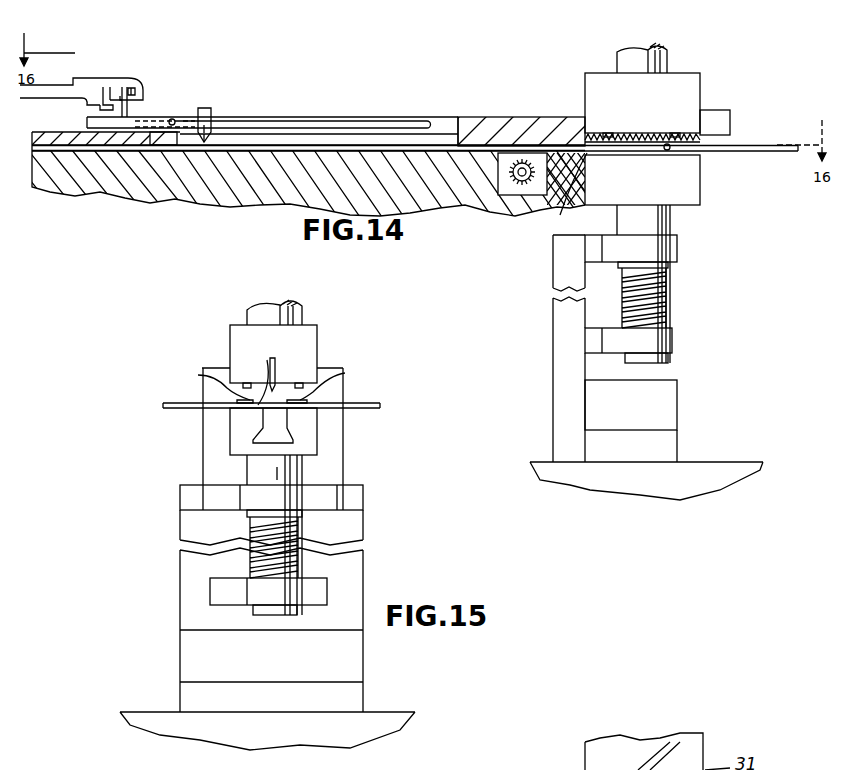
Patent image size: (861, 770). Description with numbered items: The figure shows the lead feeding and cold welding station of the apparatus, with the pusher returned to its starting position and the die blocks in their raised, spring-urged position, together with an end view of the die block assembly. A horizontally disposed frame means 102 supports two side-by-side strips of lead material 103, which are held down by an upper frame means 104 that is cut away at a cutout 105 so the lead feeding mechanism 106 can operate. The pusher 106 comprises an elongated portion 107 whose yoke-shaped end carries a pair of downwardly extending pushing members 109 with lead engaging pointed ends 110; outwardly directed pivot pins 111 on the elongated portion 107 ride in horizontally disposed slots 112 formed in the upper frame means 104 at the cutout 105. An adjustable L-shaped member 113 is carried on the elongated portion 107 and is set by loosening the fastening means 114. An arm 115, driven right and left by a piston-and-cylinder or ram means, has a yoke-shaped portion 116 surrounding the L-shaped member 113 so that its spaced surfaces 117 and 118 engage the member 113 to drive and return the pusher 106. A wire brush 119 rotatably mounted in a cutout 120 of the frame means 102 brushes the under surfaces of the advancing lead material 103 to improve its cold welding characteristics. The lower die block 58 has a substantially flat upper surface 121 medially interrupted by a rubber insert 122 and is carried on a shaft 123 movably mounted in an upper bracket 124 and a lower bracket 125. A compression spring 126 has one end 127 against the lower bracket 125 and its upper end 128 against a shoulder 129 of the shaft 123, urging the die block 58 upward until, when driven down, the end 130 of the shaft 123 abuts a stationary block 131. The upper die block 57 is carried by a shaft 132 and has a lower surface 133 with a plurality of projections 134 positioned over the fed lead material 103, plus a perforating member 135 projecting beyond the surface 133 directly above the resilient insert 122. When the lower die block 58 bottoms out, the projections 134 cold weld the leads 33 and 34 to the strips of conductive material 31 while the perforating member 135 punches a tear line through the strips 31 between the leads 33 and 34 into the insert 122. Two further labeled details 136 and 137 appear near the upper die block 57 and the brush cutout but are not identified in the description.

In FIG. 14, the frame means 102 is at (295, 190).
In FIG. 14, the strips of lead material 103 is at (330, 152).
In FIG. 14, the upper frame means 104 is at (480, 120).
In FIG. 14, the cutout 105 is at (443, 118).
In FIG. 14, the lead feeding mechanism 106 is at (192, 92).
In FIG. 14, the elongated portion 107 is at (152, 133).
In FIG. 14, the pushing members 109 is at (207, 108).
In FIG. 14, the pointed ends 110 is at (206, 143).
In FIG. 14, the pivot pins 111 is at (172, 119).
In FIG. 14, the slots 112 is at (302, 120).
In FIG. 14, the L-shaped member 113 is at (122, 85).
In FIG. 14, the fastening means 114 is at (110, 82).
In FIG. 14, the arm 115 is at (43, 88).
In FIG. 14, the yoke-shaped portion 116 is at (113, 87).
In FIG. 14, the surface 117 is at (85, 103).
In FIG. 14, the surface 118 is at (140, 88).
In FIG. 14, the wire brush 119 is at (524, 160).
In FIG. 14, the cutout 120 is at (533, 195).
In FIG. 14, the upper surface 121 is at (667, 150).
In FIG. 15, the upper surface 121 is at (250, 380).
In FIG. 15, the rubber insert 122 is at (277, 418).
In FIG. 14, the shaft 123 is at (670, 222).
In FIG. 15, the shaft 123 is at (293, 472).
In FIG. 14, the bracket 124 is at (667, 247).
In FIG. 15, the bracket 124 is at (328, 500).
In FIG. 14, the bracket 125 is at (667, 340).
In FIG. 15, the bracket 125 is at (222, 597).
In FIG. 14, the compression spring 126 is at (665, 282).
In FIG. 15, the compression spring 126 is at (253, 555).
In FIG. 14, the end 127 is at (663, 318).
In FIG. 15, the end 127 is at (272, 578).
In FIG. 14, the upper end 128 is at (663, 273).
In FIG. 15, the upper end 128 is at (293, 520).
In FIG. 14, the shoulder 129 is at (622, 268).
In FIG. 15, the shoulder 129 is at (247, 518).
In FIG. 14, the end 130 is at (653, 363).
In FIG. 15, the end 130 is at (280, 608).
In FIG. 14, the stationary block 131 is at (663, 400).
In FIG. 15, the stationary block 131 is at (353, 667).
In FIG. 14, the shaft 132 is at (667, 60).
In FIG. 15, the shaft 132 is at (302, 312).
In FIG. 14, the lower surface 133 is at (630, 140).
In FIG. 15, the lower surface 133 is at (345, 373).
In FIG. 14, the projections 134 is at (677, 132).
In FIG. 15, the projections 134 is at (198, 377).
In FIG. 14, the perforating member 135 is at (730, 120).
In FIG. 15, the perforating member 135 is at (277, 368).
In FIG. 14, the serration 136 is at (592, 138).
In FIG. 14, the junction 137 is at (570, 194).
In FIG. 14, the upper die block 57 is at (692, 85).
In FIG. 15, the upper die block 57 is at (312, 332).
In FIG. 14, the die block 58 is at (693, 178).
In FIG. 15, the die block 58 is at (312, 442).
In FIG. 15, the strips of conductive material 31 is at (373, 403).
In FIG. 15, the lead 33 is at (237, 402).
In FIG. 15, the lead 34 is at (320, 400).